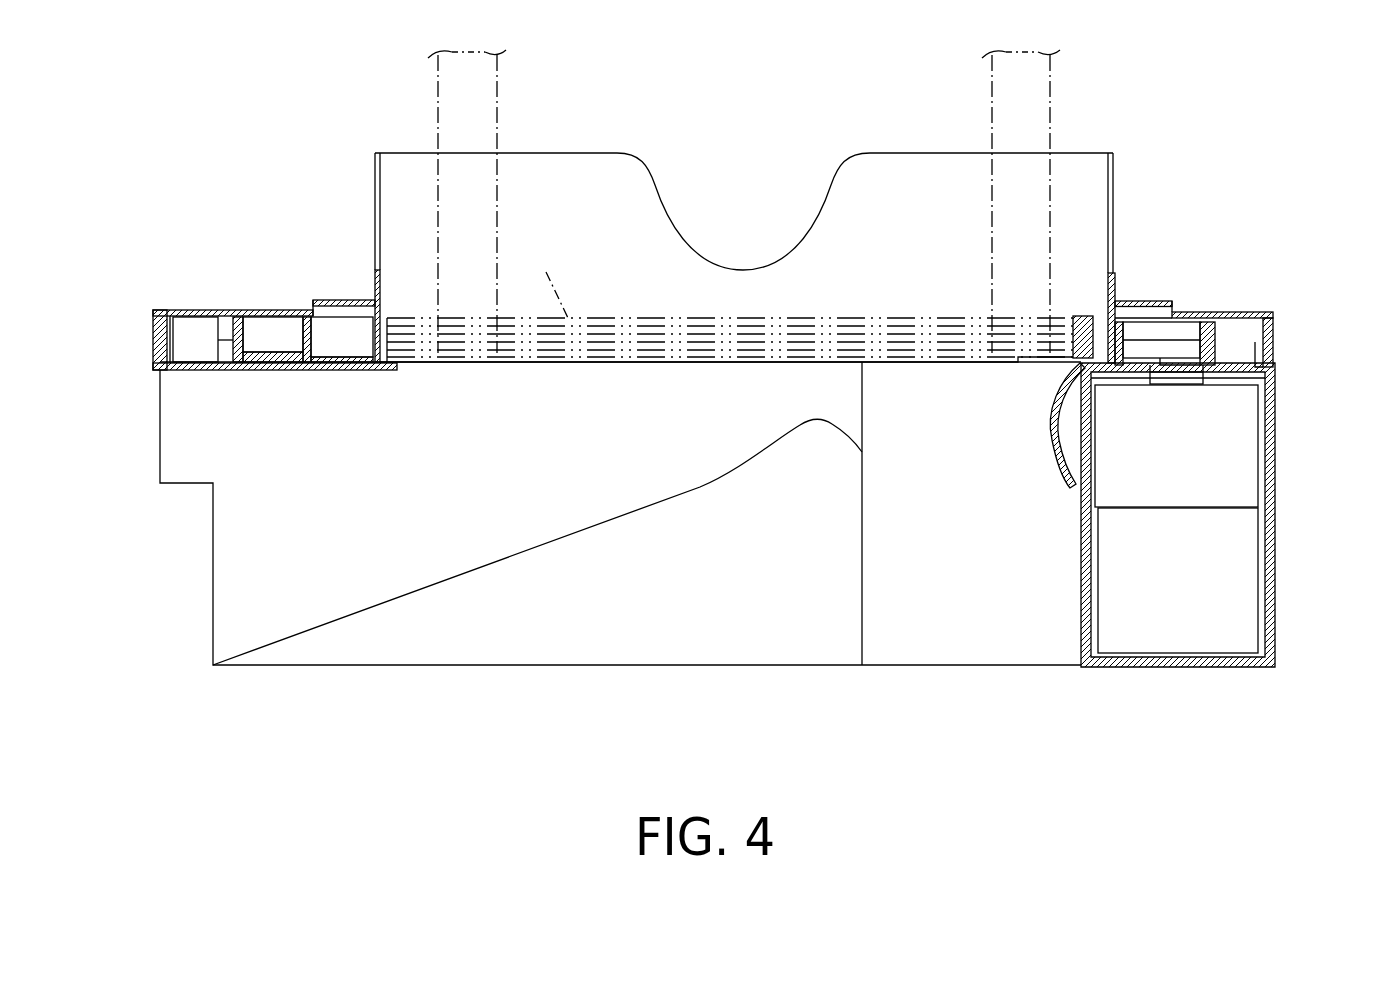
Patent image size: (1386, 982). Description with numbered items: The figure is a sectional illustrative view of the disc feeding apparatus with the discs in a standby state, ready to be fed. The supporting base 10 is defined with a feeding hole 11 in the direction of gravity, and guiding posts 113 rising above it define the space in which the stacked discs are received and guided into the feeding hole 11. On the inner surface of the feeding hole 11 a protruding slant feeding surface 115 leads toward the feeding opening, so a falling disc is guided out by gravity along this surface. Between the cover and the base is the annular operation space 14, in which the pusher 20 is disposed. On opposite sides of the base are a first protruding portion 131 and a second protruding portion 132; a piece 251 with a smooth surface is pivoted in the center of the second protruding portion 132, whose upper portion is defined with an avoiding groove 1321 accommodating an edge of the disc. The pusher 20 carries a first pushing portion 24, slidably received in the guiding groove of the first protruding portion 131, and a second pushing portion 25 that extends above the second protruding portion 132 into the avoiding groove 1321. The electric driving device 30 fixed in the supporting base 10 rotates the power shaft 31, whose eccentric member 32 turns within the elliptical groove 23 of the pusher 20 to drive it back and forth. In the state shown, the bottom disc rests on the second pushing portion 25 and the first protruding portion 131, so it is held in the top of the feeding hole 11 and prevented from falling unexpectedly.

The supporting base 10 is at (1283, 625).
The feeding hole 11 is at (762, 193).
The guiding posts 113 is at (1052, 115).
The protruding slant feeding surface 115 is at (268, 643).
The first protruding portion 131 is at (392, 371).
The avoiding groove 1321 is at (1124, 343).
The second protruding portion 132 is at (1111, 377).
The operation space 14 is at (1243, 325).
The pusher 20 is at (248, 364).
The elliptical groove 23 is at (1205, 330).
The first pushing portion 24 is at (350, 355).
The second pushing portion 25 is at (1085, 358).
The piece 251 is at (1050, 430).
The electric driving device 30 is at (1243, 560).
The power shaft 31 is at (1198, 378).
The eccentric member 32 is at (1174, 337).